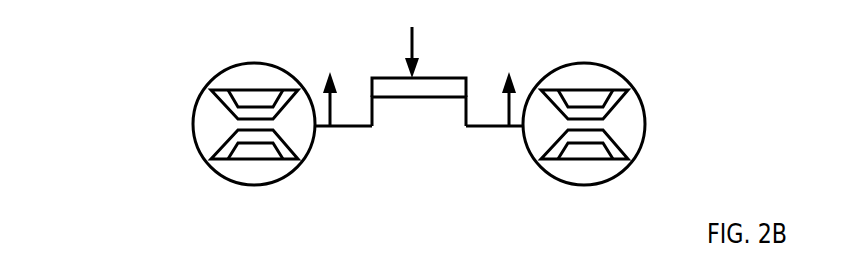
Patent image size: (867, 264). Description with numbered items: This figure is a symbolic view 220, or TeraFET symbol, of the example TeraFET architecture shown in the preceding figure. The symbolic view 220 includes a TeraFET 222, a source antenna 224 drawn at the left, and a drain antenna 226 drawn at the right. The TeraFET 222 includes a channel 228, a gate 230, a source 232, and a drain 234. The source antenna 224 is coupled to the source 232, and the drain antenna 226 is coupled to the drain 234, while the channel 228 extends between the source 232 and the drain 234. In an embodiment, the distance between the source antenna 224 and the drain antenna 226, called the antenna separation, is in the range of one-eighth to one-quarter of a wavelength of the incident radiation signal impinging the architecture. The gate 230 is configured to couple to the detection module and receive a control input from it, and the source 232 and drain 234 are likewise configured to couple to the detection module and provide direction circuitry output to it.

The symbolic view 220 is at (114, 29).
The TeraFET 222 is at (398, 177).
The source antenna 224 is at (263, 65).
The drain antenna 226 is at (580, 64).
The channel 228 is at (413, 83).
The gate 230 is at (418, 77).
The source 232 is at (343, 127).
The drain 234 is at (500, 128).